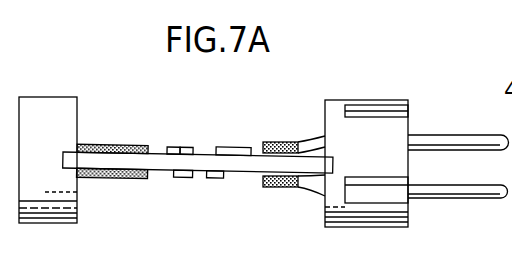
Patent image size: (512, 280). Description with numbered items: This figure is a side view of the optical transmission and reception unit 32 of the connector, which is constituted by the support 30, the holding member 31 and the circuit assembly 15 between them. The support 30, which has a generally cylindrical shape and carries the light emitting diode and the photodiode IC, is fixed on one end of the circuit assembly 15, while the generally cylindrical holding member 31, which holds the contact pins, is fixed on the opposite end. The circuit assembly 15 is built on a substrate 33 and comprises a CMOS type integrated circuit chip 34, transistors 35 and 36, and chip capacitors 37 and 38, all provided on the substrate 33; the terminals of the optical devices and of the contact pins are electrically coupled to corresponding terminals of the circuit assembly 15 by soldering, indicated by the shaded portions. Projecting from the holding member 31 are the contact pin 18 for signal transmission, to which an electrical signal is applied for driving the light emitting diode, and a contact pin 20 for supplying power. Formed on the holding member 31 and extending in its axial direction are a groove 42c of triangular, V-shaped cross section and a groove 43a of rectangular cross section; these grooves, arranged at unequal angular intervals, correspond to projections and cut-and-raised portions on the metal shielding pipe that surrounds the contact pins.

The support 30 is at (50, 101).
The circuit assembly 15 is at (198, 151).
The substrate 33 is at (115, 175).
The transistor 35 is at (170, 145).
The transistor 36 is at (186, 145).
The CMOS type integrated circuit chip 34 is at (237, 144).
The chip capacitor 38 is at (184, 176).
The chip capacitor 37 is at (215, 176).
The optical transmission and reception unit 32 is at (357, 71).
The holding member 31 is at (333, 102).
The groove 43a is at (385, 110).
The groove 42c is at (377, 197).
The contact pin for signal transmission 18 is at (452, 135).
The contact pin for supplying power 20 is at (433, 199).